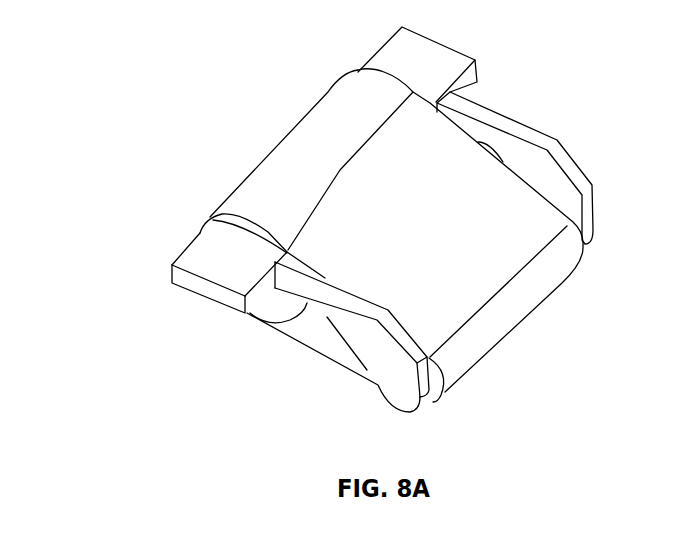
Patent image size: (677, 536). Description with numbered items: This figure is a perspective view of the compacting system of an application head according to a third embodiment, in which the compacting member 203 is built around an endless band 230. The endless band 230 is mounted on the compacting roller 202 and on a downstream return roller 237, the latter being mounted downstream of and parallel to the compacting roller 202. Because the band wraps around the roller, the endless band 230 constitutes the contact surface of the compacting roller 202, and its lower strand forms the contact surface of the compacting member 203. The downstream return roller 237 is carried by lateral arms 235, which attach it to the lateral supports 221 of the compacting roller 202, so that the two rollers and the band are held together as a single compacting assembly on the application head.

The compacting member 203 is at (536, 308).
The lateral supports 221 is at (191, 251).
The compacting roller 202 is at (283, 308).
The endless band 230 is at (335, 358).
The downstream return roller 237 is at (433, 402).
The lateral arms 235 is at (530, 132).